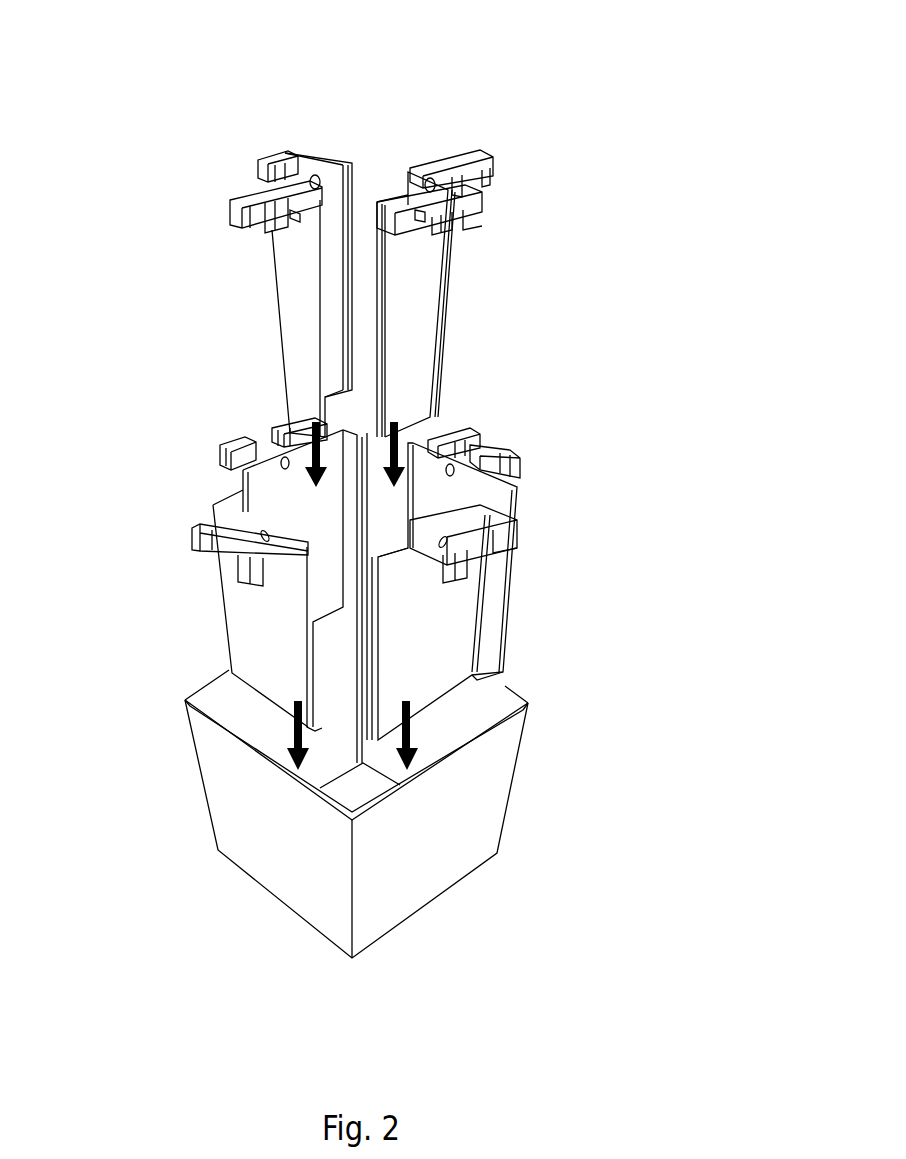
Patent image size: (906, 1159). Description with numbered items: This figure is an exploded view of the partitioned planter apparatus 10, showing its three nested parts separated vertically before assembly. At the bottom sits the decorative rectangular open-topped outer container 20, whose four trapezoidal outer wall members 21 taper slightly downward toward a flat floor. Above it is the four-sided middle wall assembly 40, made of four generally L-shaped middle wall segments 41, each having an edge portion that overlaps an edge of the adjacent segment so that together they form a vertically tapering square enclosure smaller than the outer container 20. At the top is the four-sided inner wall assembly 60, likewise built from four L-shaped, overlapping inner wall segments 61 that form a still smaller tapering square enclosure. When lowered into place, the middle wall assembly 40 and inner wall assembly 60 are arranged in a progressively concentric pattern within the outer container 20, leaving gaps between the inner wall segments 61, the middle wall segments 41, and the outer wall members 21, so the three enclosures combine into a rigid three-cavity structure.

The apparatus 10 is at (143, 105).
The outer container 20 is at (574, 785).
The outer wall member 21 is at (237, 718).
The middle wall assembly 40 is at (547, 580).
The middle wall segment 41 is at (265, 470).
The inner wall assembly 60 is at (548, 242).
The inner wall segment 61 is at (305, 176).